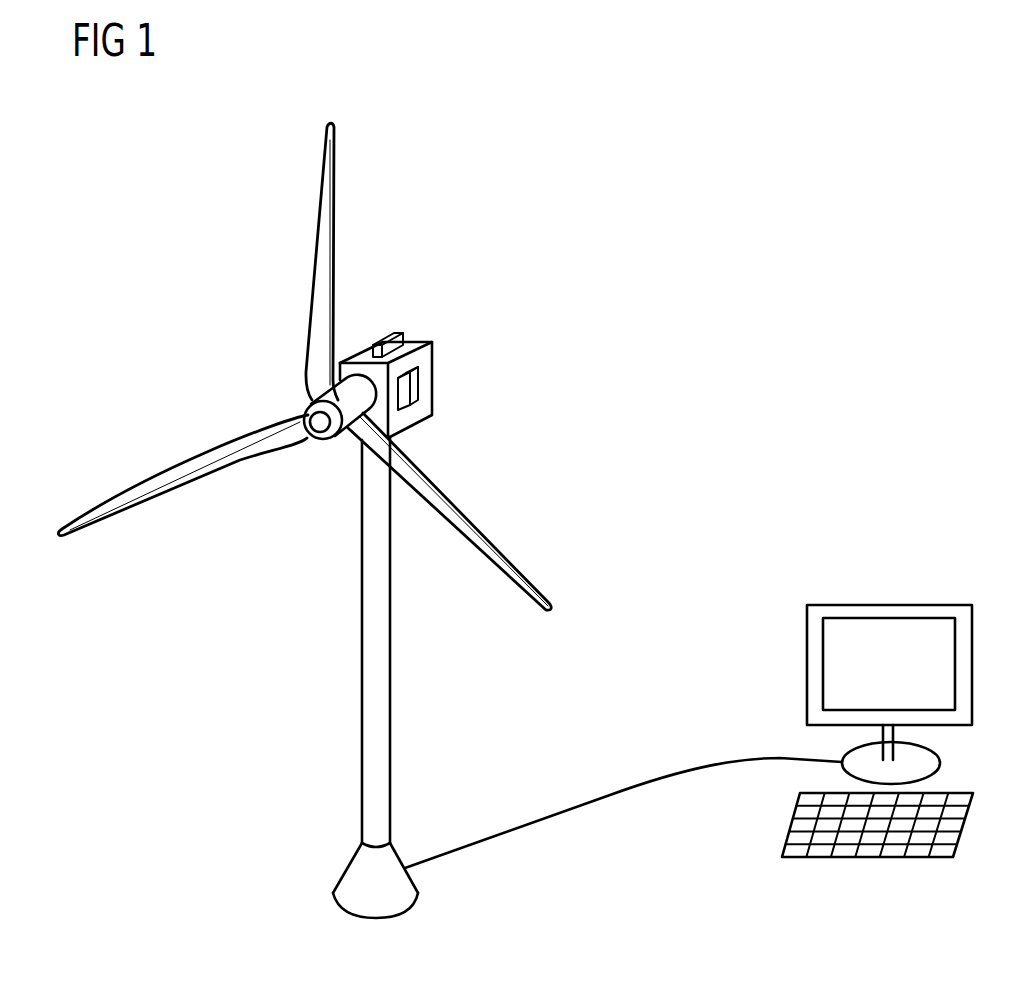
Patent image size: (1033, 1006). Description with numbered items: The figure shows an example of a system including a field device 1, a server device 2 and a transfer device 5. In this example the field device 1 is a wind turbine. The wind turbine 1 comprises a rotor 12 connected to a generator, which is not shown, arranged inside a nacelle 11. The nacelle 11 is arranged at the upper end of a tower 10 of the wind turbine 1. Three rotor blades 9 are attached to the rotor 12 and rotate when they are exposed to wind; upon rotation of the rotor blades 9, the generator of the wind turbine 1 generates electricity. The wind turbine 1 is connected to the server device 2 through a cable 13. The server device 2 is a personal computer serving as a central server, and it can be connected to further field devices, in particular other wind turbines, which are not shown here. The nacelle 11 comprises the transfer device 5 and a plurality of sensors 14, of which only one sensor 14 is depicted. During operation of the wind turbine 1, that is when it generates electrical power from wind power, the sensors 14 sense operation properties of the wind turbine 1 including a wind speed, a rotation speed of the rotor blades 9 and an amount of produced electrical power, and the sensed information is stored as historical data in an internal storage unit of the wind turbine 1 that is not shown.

The field device 1 is at (163, 288).
The server device 2 is at (878, 562).
The transfer device 5 is at (415, 392).
The rotor blades 9 is at (323, 246).
The tower 10 is at (380, 698).
The nacelle 11 is at (427, 358).
The rotor 12 is at (363, 405).
The cable 13 is at (611, 793).
The sensor 14 is at (391, 336).